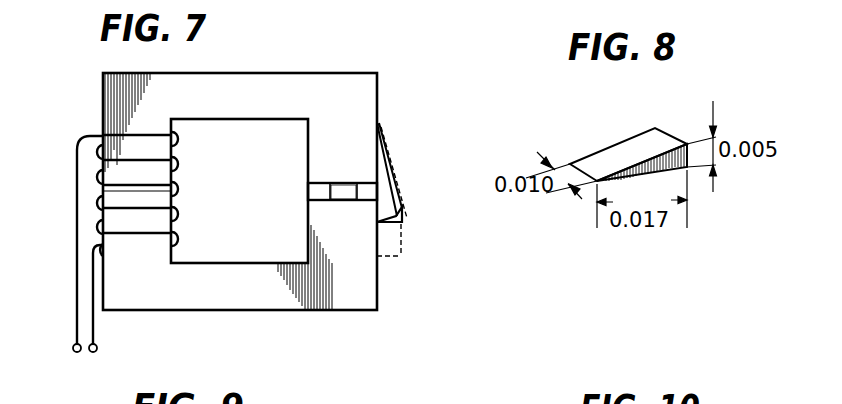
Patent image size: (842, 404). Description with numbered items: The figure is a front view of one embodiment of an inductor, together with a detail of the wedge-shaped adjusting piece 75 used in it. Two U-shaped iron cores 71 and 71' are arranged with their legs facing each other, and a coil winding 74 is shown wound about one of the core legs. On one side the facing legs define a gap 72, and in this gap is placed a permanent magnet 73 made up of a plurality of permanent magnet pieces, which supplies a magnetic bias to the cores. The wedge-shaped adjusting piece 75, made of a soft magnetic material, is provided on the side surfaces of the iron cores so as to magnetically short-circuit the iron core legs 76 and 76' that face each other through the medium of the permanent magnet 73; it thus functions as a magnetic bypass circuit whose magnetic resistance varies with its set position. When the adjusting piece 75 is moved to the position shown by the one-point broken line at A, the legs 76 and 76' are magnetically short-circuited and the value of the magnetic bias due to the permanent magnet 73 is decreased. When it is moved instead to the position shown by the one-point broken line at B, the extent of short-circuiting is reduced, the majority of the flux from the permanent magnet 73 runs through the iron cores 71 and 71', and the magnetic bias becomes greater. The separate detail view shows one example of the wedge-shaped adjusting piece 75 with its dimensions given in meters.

In FIG. 7, the U-shaped iron core 71 is at (240, 176).
In FIG. 7, the U-shaped iron core 71' is at (312, 291).
In FIG. 7, the gap 72 is at (316, 190).
In FIG. 7, the permanent magnet 73 is at (340, 194).
In FIG. 7, the coil winding 74 is at (97, 178).
In FIG. 7, the wedge-shaped adjusting piece 75 is at (404, 222).
In FIG. 8, the wedge-shaped adjusting piece 75 is at (633, 145).
In FIG. 7, the iron core leg 76 is at (384, 163).
In FIG. 7, the iron core leg 76' is at (388, 263).
In FIG. 7, the adjusting piece position A is at (393, 171).
In FIG. 7, the adjusting piece position B is at (402, 238).